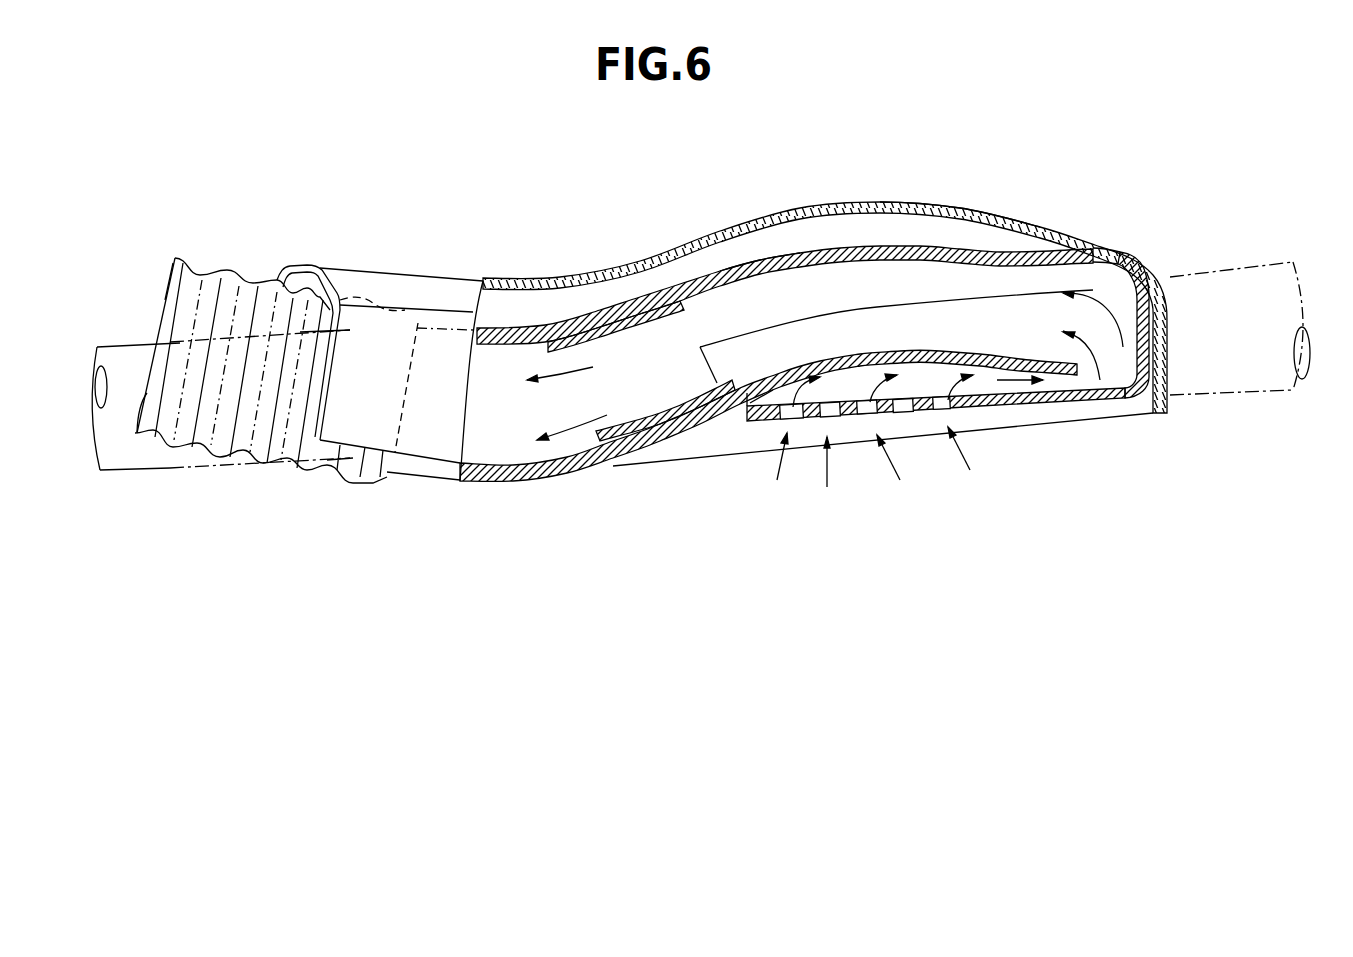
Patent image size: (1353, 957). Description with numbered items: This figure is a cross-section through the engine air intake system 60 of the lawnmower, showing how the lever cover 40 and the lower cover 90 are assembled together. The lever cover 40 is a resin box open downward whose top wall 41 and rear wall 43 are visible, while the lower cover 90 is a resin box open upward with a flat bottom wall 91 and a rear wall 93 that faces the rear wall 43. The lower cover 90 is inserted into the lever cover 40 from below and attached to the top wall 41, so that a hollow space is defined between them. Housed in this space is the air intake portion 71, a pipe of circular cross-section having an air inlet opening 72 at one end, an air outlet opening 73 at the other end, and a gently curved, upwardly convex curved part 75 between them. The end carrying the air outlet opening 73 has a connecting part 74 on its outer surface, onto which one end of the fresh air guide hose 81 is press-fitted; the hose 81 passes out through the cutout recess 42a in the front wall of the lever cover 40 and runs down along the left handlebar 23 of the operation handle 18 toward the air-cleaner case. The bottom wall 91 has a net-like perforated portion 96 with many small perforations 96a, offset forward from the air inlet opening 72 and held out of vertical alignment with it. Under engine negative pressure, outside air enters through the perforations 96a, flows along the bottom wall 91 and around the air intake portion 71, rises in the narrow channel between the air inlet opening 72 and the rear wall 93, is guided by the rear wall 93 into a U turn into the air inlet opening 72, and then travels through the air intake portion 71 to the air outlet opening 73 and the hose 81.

The engine air intake system 60 is at (163, 213).
The left handlebar 23 is at (207, 341).
The operation handle 18 is at (115, 345).
The fresh air guide hose 81 is at (214, 283).
The cutout recess 42a is at (300, 278).
The lever cover 40 is at (422, 268).
The air outlet opening 73 is at (785, 237).
The connecting part 74 is at (642, 290).
The curved part 75 is at (765, 237).
The top wall 41 is at (825, 267).
The air intake portion 71 is at (977, 245).
The air inlet opening 72 is at (1136, 257).
The rear wall 93 is at (1163, 280).
The rear wall 43 is at (1167, 345).
The lower cover 90 is at (912, 492).
The bottom wall 91 is at (936, 492).
The perforated portion 96 is at (869, 496).
The perforations 96a is at (937, 410).